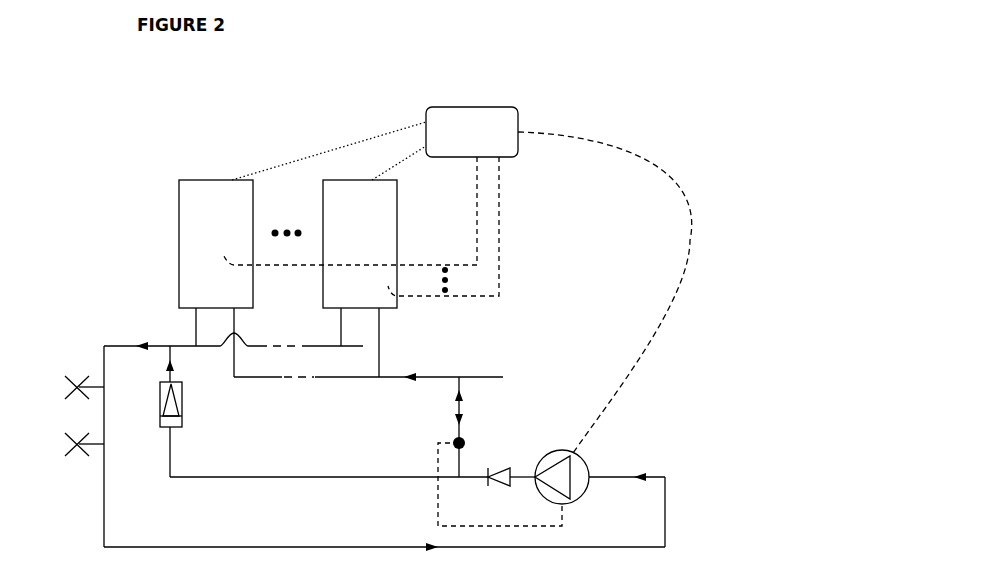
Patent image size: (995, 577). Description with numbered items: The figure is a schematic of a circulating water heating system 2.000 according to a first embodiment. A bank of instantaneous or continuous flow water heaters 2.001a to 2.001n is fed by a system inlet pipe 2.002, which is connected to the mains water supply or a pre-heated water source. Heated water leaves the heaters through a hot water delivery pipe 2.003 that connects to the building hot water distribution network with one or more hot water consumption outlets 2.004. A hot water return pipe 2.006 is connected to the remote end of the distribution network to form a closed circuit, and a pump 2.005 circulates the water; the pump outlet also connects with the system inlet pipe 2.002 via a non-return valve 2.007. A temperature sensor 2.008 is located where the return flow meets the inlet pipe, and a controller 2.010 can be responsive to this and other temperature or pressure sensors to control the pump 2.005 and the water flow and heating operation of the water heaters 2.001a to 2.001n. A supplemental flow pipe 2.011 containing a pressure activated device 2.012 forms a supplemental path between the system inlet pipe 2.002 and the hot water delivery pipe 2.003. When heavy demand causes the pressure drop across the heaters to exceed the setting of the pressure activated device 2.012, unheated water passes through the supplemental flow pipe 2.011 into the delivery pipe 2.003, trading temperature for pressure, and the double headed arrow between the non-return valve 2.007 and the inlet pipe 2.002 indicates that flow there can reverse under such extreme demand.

The system 2.000 is at (582, 102).
The continuous flow water heater 2.001a is at (216, 278).
The continuous flow water heater 2.001n is at (360, 278).
The controller 2.010 is at (457, 280).
The system inlet pipe 2.002 is at (372, 364).
The hot water delivery pipe 2.003 is at (165, 342).
The hot water consumption outlets 2.004 is at (71, 416).
The pump 2.005 is at (583, 459).
The hot water return pipe 2.006 is at (423, 543).
The non-return valve 2.007 is at (507, 462).
The temperature sensor 2.008 is at (452, 442).
The supplemental flow pipe 2.011 is at (255, 477).
The pressure activated device 2.012 is at (182, 392).